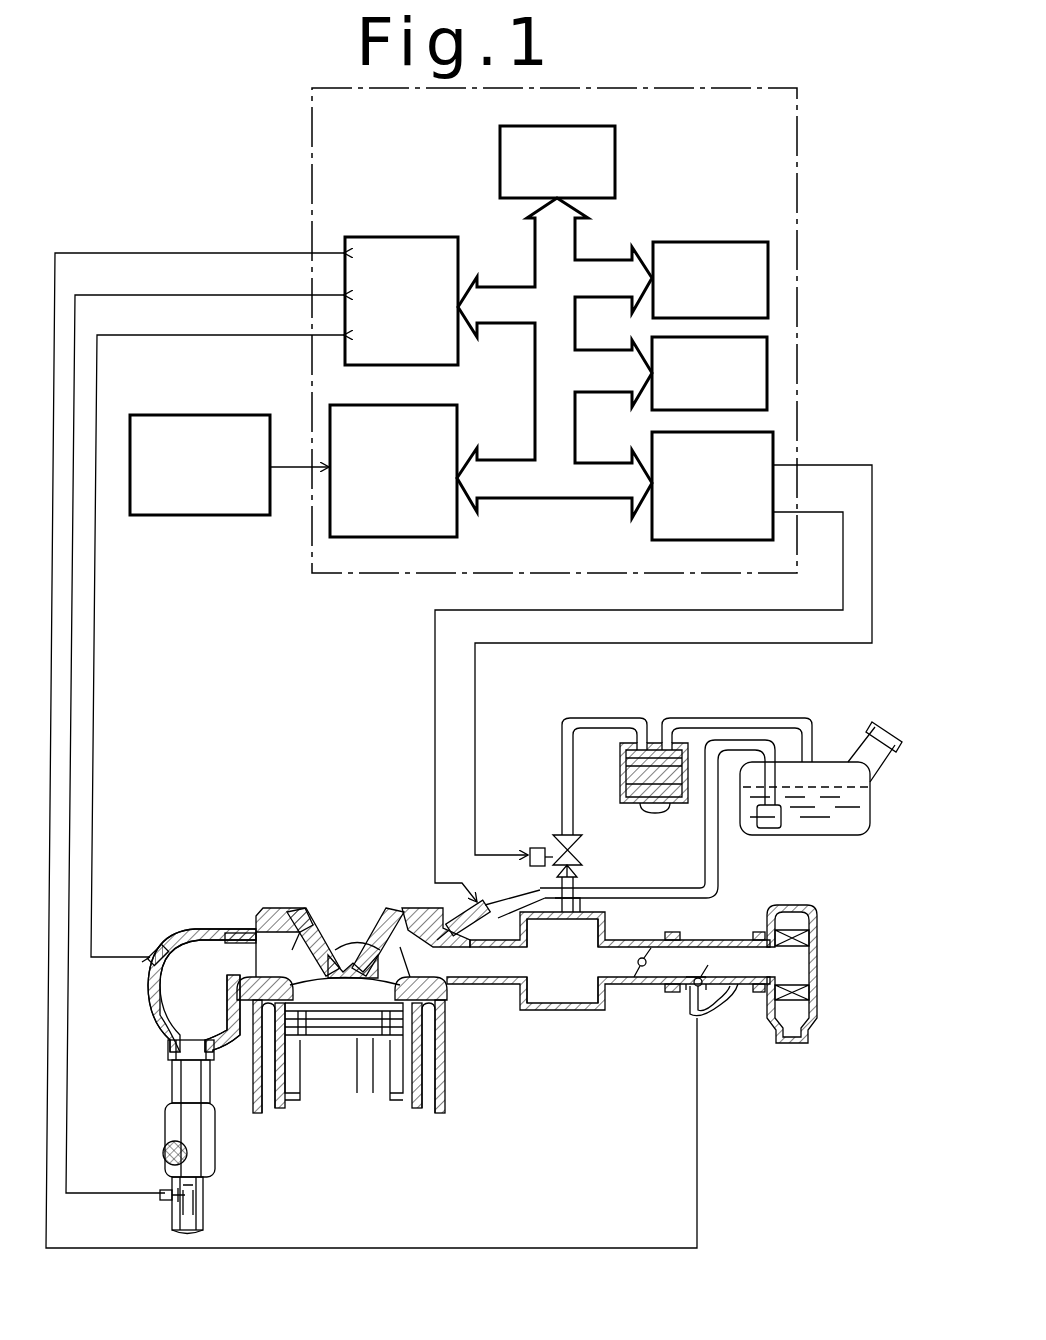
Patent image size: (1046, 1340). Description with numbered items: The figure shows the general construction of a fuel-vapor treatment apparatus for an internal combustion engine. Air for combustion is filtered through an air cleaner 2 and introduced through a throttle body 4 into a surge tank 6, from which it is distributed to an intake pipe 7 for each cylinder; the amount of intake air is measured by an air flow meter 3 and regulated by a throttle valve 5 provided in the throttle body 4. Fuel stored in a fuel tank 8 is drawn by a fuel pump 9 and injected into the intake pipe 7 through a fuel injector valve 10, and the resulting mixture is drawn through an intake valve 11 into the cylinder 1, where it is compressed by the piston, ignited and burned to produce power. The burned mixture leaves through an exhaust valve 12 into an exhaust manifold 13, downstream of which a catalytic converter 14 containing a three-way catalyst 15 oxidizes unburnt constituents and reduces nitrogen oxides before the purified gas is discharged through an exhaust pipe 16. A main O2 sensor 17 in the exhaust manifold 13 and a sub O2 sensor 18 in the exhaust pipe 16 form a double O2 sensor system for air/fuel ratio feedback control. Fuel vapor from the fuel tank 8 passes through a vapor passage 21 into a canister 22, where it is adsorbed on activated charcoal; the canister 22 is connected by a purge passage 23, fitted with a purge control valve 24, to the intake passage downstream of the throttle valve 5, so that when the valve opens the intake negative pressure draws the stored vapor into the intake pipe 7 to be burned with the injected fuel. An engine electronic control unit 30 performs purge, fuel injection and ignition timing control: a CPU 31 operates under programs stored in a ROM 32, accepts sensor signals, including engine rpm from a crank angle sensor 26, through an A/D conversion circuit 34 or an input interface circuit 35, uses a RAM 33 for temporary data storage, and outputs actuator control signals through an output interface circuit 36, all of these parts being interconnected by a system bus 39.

The cylinder 1 is at (444, 1086).
The air cleaner 2 is at (817, 980).
The air flow meter 3 is at (718, 1010).
The throttle body 4 is at (628, 942).
The throttle valve 5 is at (641, 968).
The surge tank 6 is at (558, 1012).
The intake pipe 7 is at (505, 982).
The fuel tank 8 is at (822, 838).
The fuel pump 9 is at (769, 830).
The fuel injector valve 10 is at (493, 918).
The intake valve 11 is at (357, 945).
The exhaust valve 12 is at (263, 912).
The exhaust manifold 13 is at (190, 938).
The catalytic converter 14 is at (175, 1125).
The three-way catalyst 15 is at (163, 1153).
The exhaust pipe 16 is at (205, 1205).
The main O2 sensor 17 is at (150, 950).
The sub O2 sensor 18 is at (165, 1202).
The vapor passage 21 is at (745, 720).
The canister 22 is at (682, 820).
The purge passage 23 is at (570, 803).
The purge control valve 24 is at (535, 848).
The crank angle sensor 26 is at (222, 425).
The engine electronic control unit 30 is at (800, 213).
The CPU 31 is at (615, 170).
The ROM 32 is at (725, 248).
The RAM 33 is at (762, 372).
The A/D conversion circuit 34 is at (407, 245).
The input interface circuit 35 is at (418, 415).
The output interface circuit 36 is at (765, 447).
The system bus 39 is at (572, 243).